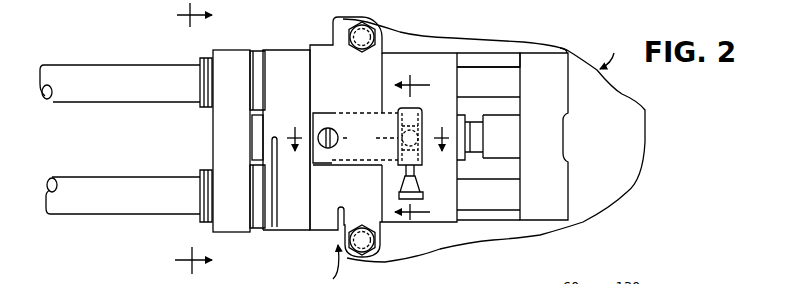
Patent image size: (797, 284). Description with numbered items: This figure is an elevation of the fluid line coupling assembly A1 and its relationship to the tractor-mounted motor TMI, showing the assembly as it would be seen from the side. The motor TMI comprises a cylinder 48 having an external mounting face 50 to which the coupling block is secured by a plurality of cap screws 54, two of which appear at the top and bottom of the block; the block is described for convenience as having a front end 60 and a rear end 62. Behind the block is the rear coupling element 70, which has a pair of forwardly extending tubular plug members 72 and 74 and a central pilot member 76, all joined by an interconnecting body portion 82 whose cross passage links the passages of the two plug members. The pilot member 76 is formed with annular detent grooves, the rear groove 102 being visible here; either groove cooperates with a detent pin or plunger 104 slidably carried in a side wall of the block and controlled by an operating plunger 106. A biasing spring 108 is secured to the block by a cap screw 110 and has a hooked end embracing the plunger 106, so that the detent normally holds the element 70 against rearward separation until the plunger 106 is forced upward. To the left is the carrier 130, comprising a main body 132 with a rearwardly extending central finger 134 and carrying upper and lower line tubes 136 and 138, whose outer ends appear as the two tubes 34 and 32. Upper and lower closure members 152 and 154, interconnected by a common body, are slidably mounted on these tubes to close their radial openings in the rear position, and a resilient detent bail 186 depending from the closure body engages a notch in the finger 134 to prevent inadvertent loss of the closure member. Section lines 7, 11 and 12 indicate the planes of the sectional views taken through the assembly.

The lower tube 32 is at (81, 186).
The upper tube 34 is at (99, 72).
The cylinder 48 is at (502, 50).
The external mounting face 50 is at (494, 139).
The cap screws 54 is at (367, 35).
The front end 60 is at (375, 142).
The rear end 62 is at (462, 223).
The rear coupling element 70 is at (568, 53).
The plug member 72 is at (472, 72).
The plug member 74 is at (490, 203).
The central pilot member 76 is at (489, 140).
The body portion 82 is at (556, 137).
The rear annular detent groove 102 is at (470, 153).
The detent pin or plunger 104 is at (355, 138).
The operating plunger 106 is at (399, 192).
The spring 108 is at (352, 167).
The cap screw 110 is at (335, 127).
The carrier 130 is at (218, 142).
The main body 132 is at (225, 114).
The central finger 134 is at (255, 146).
The upper line tube 136 is at (255, 60).
The lower line tube 138 is at (262, 226).
The upper closure member 152 is at (292, 143).
The lower closure member 154 is at (293, 226).
The detent bail 186 is at (276, 230).
The section line 7 is at (186, 138).
The section line 11 is at (368, 131).
The section line 12 is at (412, 158).
The fluid line coupling assembly A1 is at (327, 264).
The tractor-mounted motor TMI is at (611, 54).